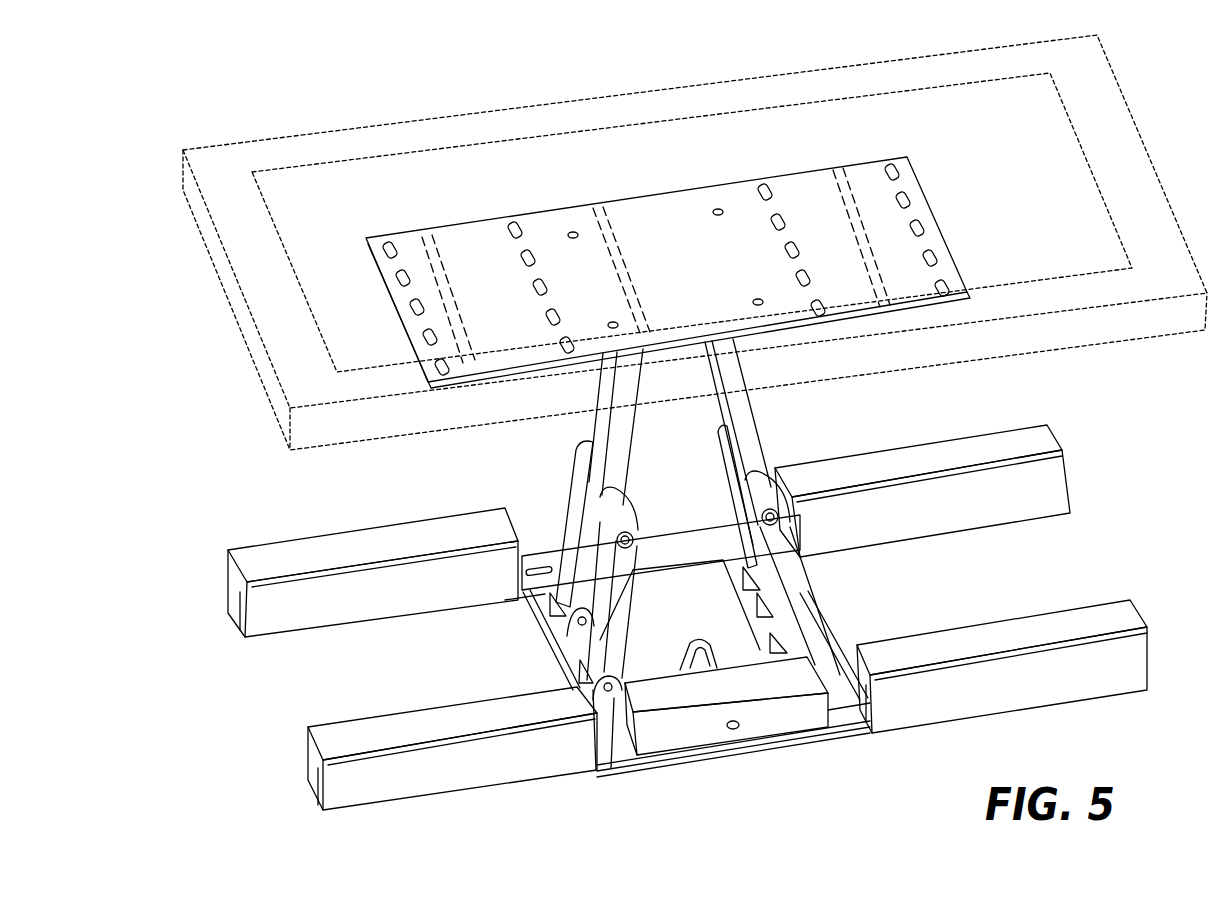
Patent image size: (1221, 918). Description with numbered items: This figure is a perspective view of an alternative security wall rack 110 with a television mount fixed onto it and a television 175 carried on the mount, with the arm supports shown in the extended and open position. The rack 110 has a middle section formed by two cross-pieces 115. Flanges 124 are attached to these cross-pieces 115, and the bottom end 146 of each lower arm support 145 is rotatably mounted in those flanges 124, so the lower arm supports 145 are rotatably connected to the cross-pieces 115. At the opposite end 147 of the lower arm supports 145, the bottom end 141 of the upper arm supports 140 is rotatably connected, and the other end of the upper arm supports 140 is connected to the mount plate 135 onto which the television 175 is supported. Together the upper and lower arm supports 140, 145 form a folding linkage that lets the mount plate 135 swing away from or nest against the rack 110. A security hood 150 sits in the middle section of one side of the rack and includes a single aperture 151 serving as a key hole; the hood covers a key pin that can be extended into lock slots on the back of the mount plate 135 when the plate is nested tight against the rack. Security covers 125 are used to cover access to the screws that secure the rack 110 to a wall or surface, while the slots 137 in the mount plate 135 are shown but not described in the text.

The security wall rack 110 is at (708, 762).
The cross-pieces 115 is at (553, 625).
The flanges 124 is at (555, 663).
The security covers 125 is at (318, 556).
The mount plate 135 is at (640, 223).
The mounting slots 137 is at (428, 337).
The upper arm supports 140 is at (612, 430).
The bottom end of the upper arm supports 141 is at (598, 487).
The lower arm supports 145 is at (625, 604).
The bottom end of the lower arm supports 146 is at (615, 648).
The opposite end of the lower arm supports 147 is at (762, 512).
The security hood 150 is at (680, 738).
The aperture 151 is at (738, 728).
The television 175 is at (1137, 140).